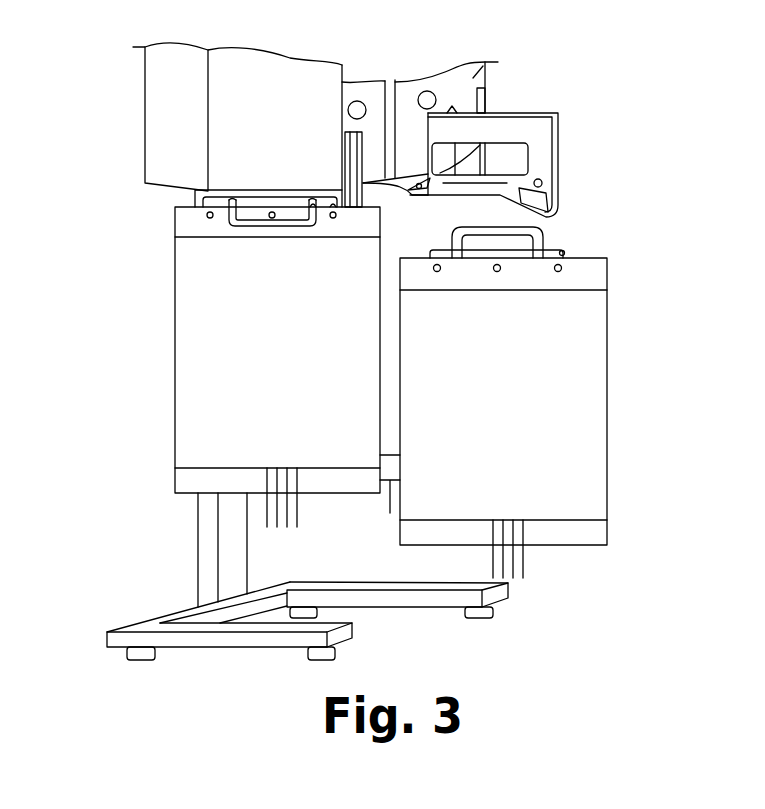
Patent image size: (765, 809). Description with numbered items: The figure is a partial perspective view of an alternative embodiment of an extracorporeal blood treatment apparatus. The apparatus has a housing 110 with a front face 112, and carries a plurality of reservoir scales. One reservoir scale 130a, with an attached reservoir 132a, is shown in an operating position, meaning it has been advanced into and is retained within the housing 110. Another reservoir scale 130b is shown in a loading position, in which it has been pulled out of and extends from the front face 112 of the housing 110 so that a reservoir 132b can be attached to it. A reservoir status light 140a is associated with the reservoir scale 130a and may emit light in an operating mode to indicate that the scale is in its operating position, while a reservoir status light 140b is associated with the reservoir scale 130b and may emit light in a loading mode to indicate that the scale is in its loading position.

The housing 110 is at (143, 112).
The front face 112 is at (487, 73).
The reservoir scale 130a is at (345, 160).
The reservoir scale 130b is at (549, 109).
The reservoir 132a is at (202, 292).
The reservoir 132b is at (577, 348).
The reservoir status light 140a is at (357, 101).
The reservoir status light 140b is at (427, 91).